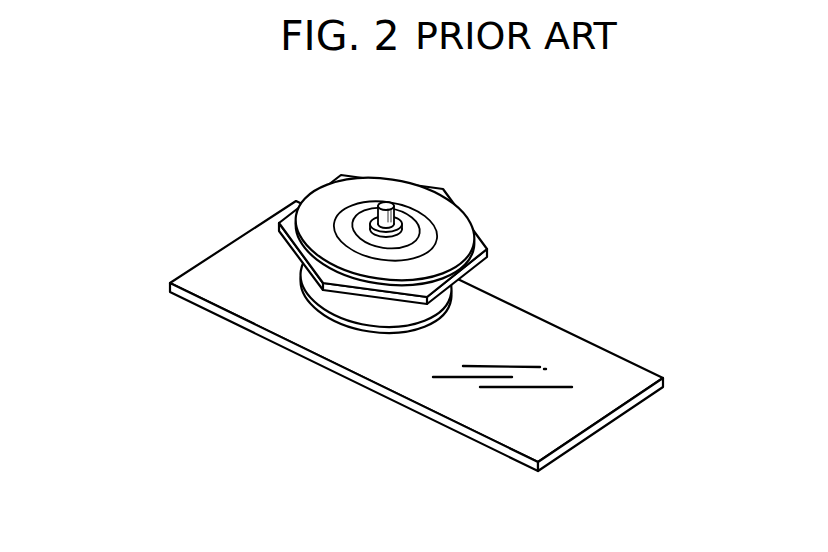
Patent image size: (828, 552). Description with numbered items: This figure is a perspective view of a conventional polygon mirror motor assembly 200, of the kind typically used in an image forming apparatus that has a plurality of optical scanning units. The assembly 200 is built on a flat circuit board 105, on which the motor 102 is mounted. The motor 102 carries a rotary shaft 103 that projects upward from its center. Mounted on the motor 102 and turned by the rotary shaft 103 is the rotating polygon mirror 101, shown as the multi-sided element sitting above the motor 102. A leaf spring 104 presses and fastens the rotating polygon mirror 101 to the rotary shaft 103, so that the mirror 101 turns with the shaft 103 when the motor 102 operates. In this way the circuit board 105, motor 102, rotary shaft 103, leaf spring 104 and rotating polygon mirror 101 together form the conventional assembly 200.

The polygon mirror motor assembly 200 is at (136, 130).
The rotating polygon mirror 101 is at (450, 230).
The motor 102 is at (350, 307).
The rotary shaft 103 is at (388, 203).
The leaf spring 104 is at (362, 216).
The circuit board 105 is at (533, 332).